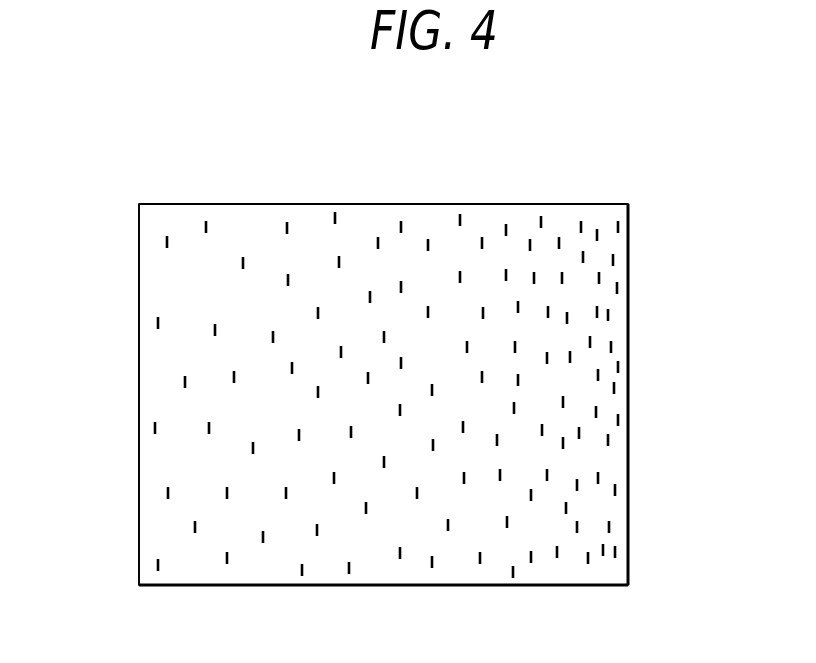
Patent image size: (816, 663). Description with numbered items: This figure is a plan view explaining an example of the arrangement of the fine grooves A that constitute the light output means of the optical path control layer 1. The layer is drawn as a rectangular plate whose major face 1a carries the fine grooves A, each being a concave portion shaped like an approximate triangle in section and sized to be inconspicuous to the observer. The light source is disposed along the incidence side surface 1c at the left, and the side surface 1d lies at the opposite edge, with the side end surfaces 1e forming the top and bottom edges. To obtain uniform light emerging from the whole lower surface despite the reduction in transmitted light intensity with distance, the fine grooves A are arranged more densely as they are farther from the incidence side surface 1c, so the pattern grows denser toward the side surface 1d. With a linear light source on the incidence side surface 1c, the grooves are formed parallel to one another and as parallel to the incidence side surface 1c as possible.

The light guide plate 1 is at (647, 337).
The light exit surface 1a is at (518, 235).
The incidence side surface 1c is at (138, 347).
The side surface 1d is at (630, 240).
The side end surface 1e is at (443, 204).
The fine groove A is at (289, 228).